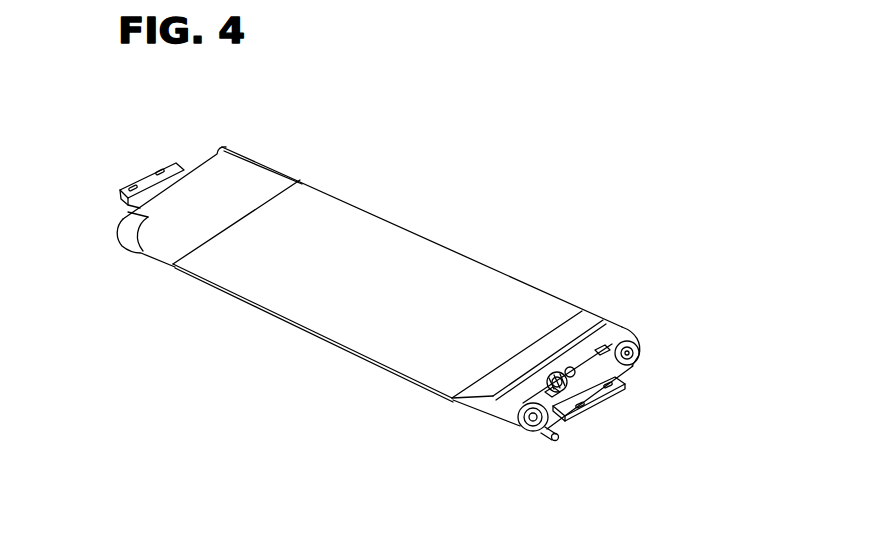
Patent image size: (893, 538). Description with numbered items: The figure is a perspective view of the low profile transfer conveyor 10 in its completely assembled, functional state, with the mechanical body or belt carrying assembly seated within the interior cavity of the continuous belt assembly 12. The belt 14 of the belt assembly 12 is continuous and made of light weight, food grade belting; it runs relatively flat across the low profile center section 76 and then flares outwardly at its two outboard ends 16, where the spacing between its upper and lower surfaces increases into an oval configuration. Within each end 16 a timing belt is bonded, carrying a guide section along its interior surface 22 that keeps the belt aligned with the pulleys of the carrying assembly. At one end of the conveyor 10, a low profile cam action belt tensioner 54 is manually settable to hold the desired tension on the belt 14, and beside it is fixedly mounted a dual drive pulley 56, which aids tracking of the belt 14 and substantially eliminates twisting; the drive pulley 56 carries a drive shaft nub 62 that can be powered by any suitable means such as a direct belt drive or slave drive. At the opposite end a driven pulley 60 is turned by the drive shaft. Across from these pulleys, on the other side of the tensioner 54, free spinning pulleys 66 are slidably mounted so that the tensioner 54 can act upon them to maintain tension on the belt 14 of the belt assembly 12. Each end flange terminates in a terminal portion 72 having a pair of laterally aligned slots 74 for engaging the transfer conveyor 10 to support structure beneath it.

The transfer conveyor 10 is at (408, 435).
The belt assembly 12 is at (490, 249).
The belt 14 is at (372, 286).
The outboard ends 16 is at (265, 165).
The interior surface 22 is at (666, 0).
The cam action belt tensioner 54 is at (640, 368).
The dual drive pulley 56 is at (522, 432).
The driven pulley 60 is at (128, 212).
The drive shaft nub 62 is at (540, 435).
The free spinning pulleys 66 is at (632, 342).
The terminal portion 72 is at (125, 198).
The slots 74 is at (165, 158).
The low profile center section 76 is at (412, 229).